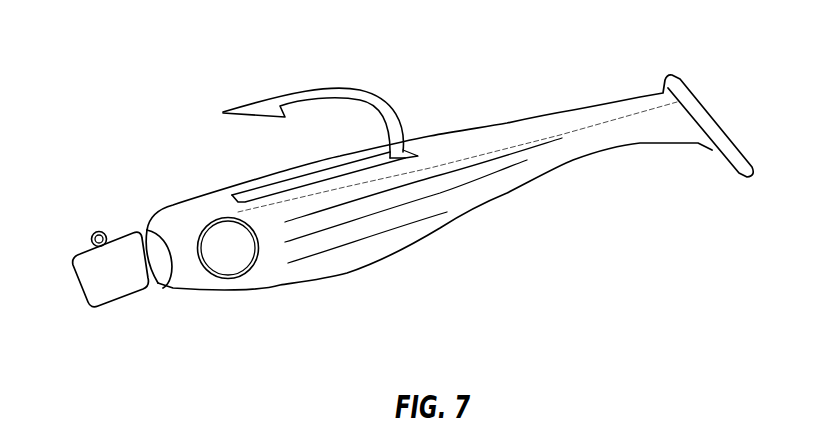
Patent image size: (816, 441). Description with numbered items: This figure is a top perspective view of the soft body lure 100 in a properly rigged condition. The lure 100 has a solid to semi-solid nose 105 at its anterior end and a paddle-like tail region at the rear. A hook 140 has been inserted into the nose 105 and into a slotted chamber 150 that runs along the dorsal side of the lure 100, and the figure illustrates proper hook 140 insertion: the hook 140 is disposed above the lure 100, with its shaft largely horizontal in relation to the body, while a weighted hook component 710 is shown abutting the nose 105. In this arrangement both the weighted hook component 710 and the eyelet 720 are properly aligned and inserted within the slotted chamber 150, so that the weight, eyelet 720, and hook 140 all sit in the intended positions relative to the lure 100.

The soft body lure 100 is at (600, 50).
The nose 105 is at (167, 297).
The hook 140 is at (382, 108).
The slotted chamber 150 is at (250, 196).
The weighted hook component 710 is at (133, 281).
The eyelet 720 is at (94, 233).